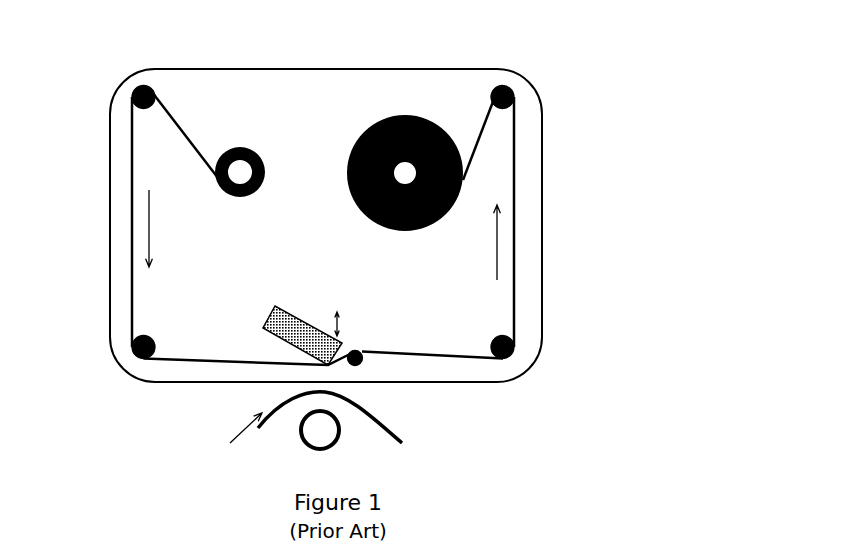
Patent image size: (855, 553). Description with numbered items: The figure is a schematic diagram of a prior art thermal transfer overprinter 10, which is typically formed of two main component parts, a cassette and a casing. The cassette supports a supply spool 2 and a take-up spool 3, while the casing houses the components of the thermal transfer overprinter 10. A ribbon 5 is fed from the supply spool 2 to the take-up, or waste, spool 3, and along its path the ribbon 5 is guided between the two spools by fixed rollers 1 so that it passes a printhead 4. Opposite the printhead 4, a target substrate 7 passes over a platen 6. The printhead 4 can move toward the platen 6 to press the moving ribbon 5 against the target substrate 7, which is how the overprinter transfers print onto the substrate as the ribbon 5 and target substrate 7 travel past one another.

The fixed rollers 1 is at (122, 91).
The supply spool 2 is at (240, 131).
The take-up spool 3 is at (397, 92).
The printhead 4 is at (260, 342).
The ribbon 5 is at (116, 164).
The platen 6 is at (354, 426).
The target substrate 7 is at (402, 424).
The thermal transfer overprinter 10 is at (620, 239).